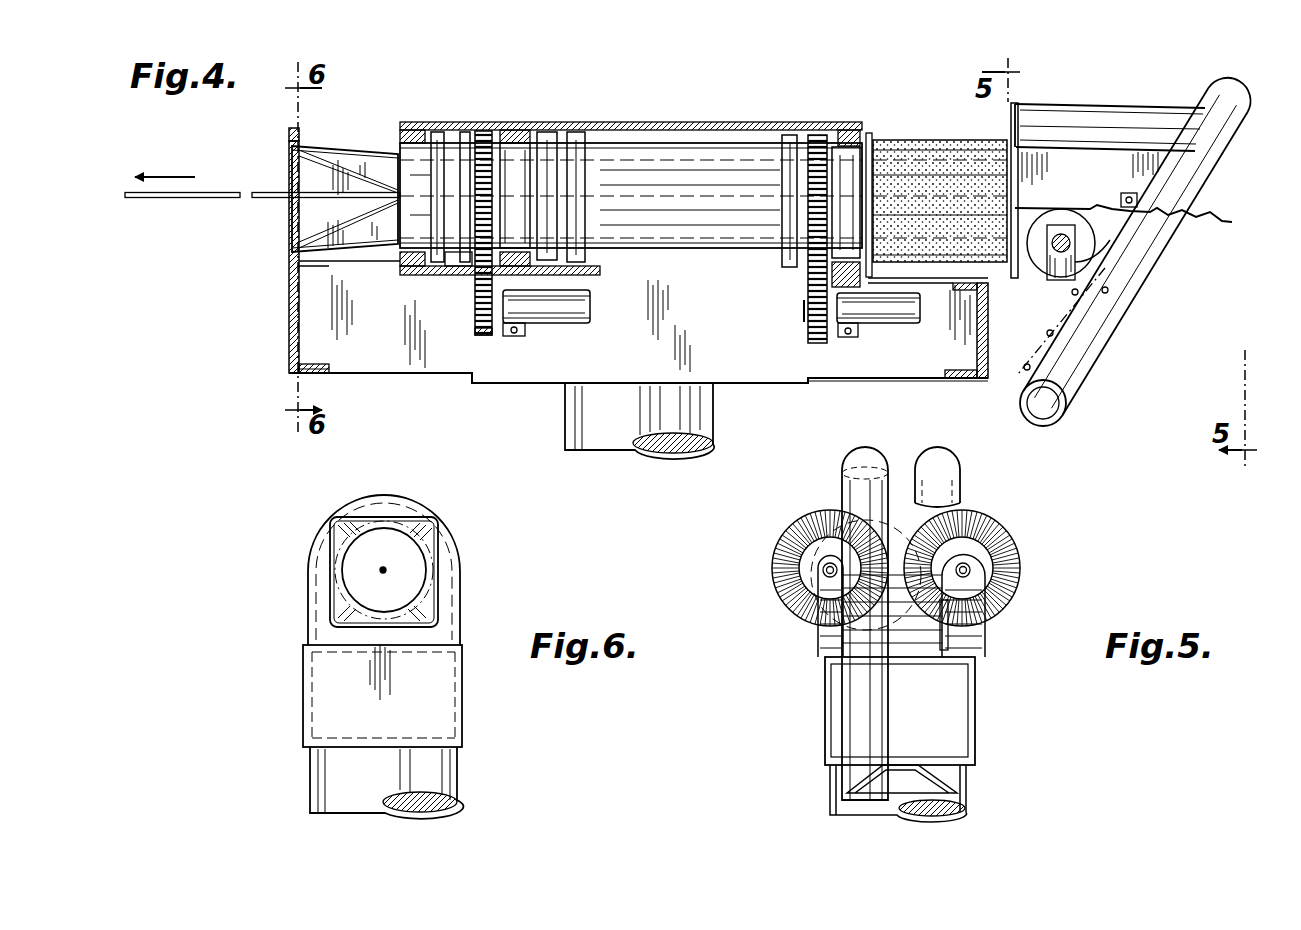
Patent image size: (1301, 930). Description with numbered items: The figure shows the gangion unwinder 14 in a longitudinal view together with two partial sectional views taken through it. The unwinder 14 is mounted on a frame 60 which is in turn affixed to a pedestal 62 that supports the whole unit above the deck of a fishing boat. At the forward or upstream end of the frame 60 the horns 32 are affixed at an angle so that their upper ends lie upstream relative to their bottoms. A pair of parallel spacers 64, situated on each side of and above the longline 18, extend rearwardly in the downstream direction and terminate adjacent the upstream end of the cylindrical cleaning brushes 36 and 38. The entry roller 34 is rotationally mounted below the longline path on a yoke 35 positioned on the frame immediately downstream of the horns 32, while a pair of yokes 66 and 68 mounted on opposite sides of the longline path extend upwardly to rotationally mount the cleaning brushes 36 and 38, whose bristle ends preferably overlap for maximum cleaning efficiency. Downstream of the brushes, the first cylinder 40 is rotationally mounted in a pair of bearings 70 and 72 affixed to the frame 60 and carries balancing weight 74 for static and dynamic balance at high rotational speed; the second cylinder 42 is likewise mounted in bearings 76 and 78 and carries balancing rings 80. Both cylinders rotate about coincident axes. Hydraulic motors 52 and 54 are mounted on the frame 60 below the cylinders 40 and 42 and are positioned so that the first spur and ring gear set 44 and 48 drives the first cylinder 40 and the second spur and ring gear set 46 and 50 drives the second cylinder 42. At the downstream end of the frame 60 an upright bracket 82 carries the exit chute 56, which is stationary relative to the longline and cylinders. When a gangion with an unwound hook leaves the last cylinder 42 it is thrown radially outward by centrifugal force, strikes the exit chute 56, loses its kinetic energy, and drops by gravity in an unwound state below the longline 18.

In FIG. 4, the unwinder 14 is at (684, 104).
In FIG. 6, the unwinder 14 is at (452, 508).
In FIG. 4, the longline 18 is at (152, 199).
In FIG. 4, the horns 32 is at (1224, 135).
In FIG. 5, the horns 32 is at (898, 470).
In FIG. 4, the entry roller 34 is at (1095, 248).
In FIG. 5, the entry roller 34 is at (890, 640).
In FIG. 4, the yoke 35 is at (1070, 258).
In FIG. 4, the cleaning brush 36 is at (912, 150).
In FIG. 5, the cleaning brush 36 is at (772, 592).
In FIG. 5, the cleaning brush 38 is at (1010, 585).
In FIG. 4, the first cylinder 40 is at (715, 250).
In FIG. 4, the second cylinder 42 is at (452, 258).
In FIG. 4, the first spur and ring gear set 44 is at (818, 136).
In FIG. 4, the second spur and ring gear set 46 is at (488, 130).
In FIG. 4, the first spur and ring gear set 48 is at (806, 312).
In FIG. 4, the second spur and ring gear set 50 is at (480, 335).
In FIG. 4, the hydraulic motor 52 is at (892, 316).
In FIG. 4, the hydraulic motor 54 is at (567, 315).
In FIG. 4, the exit chute 56 is at (289, 227).
In FIG. 6, the exit chute 56 is at (440, 597).
In FIG. 4, the frame 60 is at (291, 338).
In FIG. 6, the frame 60 is at (318, 688).
In FIG. 5, the frame 60 is at (823, 703).
In FIG. 4, the pedestal 62 is at (580, 413).
In FIG. 6, the pedestal 62 is at (450, 775).
In FIG. 4, the spacers 64 is at (1137, 118).
In FIG. 4, the yoke 66 is at (1017, 163).
In FIG. 5, the yoke 66 is at (825, 615).
In FIG. 5, the yoke 68 is at (965, 620).
In FIG. 4, the bearing 70 is at (845, 145).
In FIG. 4, the bearing 72 is at (546, 127).
In FIG. 4, the balancing weight 74 is at (588, 136).
In FIG. 4, the bearing 76 is at (520, 130).
In FIG. 4, the bearing 78 is at (410, 128).
In FIG. 4, the balancing rings 80 is at (468, 130).
In FIG. 4, the upright bracket 82 is at (288, 133).